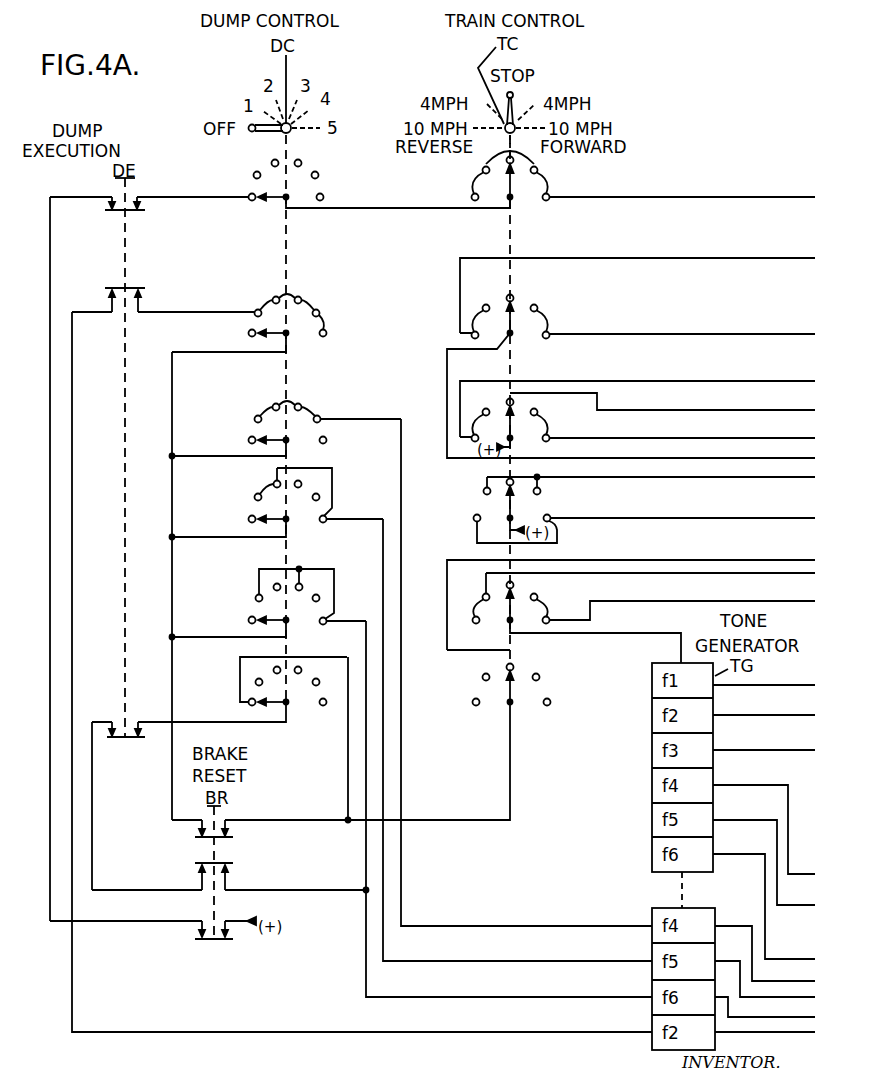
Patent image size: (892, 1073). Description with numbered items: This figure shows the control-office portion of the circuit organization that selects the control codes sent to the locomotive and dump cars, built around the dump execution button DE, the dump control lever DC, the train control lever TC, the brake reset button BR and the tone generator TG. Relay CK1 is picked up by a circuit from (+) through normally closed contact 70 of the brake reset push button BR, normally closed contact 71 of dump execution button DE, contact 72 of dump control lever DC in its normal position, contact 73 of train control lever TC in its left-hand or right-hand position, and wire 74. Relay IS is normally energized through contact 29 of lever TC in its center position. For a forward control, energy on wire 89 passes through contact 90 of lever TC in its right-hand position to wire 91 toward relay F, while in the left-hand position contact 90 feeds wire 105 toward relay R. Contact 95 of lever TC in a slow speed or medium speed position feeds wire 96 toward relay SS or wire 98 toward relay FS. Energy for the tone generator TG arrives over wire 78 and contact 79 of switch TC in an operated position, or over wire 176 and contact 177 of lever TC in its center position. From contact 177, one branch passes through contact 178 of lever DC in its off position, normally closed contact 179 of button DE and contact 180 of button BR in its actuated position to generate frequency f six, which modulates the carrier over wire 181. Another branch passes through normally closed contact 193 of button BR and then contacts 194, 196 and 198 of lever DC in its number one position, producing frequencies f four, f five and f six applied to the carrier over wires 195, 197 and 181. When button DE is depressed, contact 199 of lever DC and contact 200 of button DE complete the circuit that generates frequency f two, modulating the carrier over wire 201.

The contact of dump execution button DE 71 is at (130, 213).
The contact of dump control lever DC 72 is at (278, 202).
The contact of train control lever TC 73 is at (513, 192).
The wire 74 is at (804, 197).
The wire 105 is at (808, 258).
The wire 91 is at (797, 334).
The contact of push button DE 200 is at (122, 286).
The contact of switch DC 199 is at (279, 338).
The contact of train control lever TC 90 is at (513, 322).
The contact of switch DC 194 is at (281, 445).
The contact of lever TC 29 is at (509, 428).
The wire 89 is at (808, 458).
The contact of lever DC 196 is at (281, 523).
The contact of lever TC 95 is at (508, 508).
The wire 96 is at (808, 478).
The wire 98 is at (770, 519).
The wire 176 is at (786, 560).
The contact of lever DC 198 is at (281, 624).
The contact of train control switch TC 79 is at (508, 612).
The wire 78 is at (797, 601).
The contact of dump control lever DC 178 is at (281, 706).
The contact of dump execution button DE 179 is at (118, 742).
The contact of lever TC 177 is at (508, 698).
The contact of button BR 193 is at (232, 838).
The contact of brake reset button BR 180 is at (233, 864).
The contact of brake reset push button BR 70 is at (216, 941).
The wire 195 is at (722, 927).
The wire 197 is at (763, 1005).
The wire 181 is at (761, 1024).
The wire 201 is at (808, 1033).